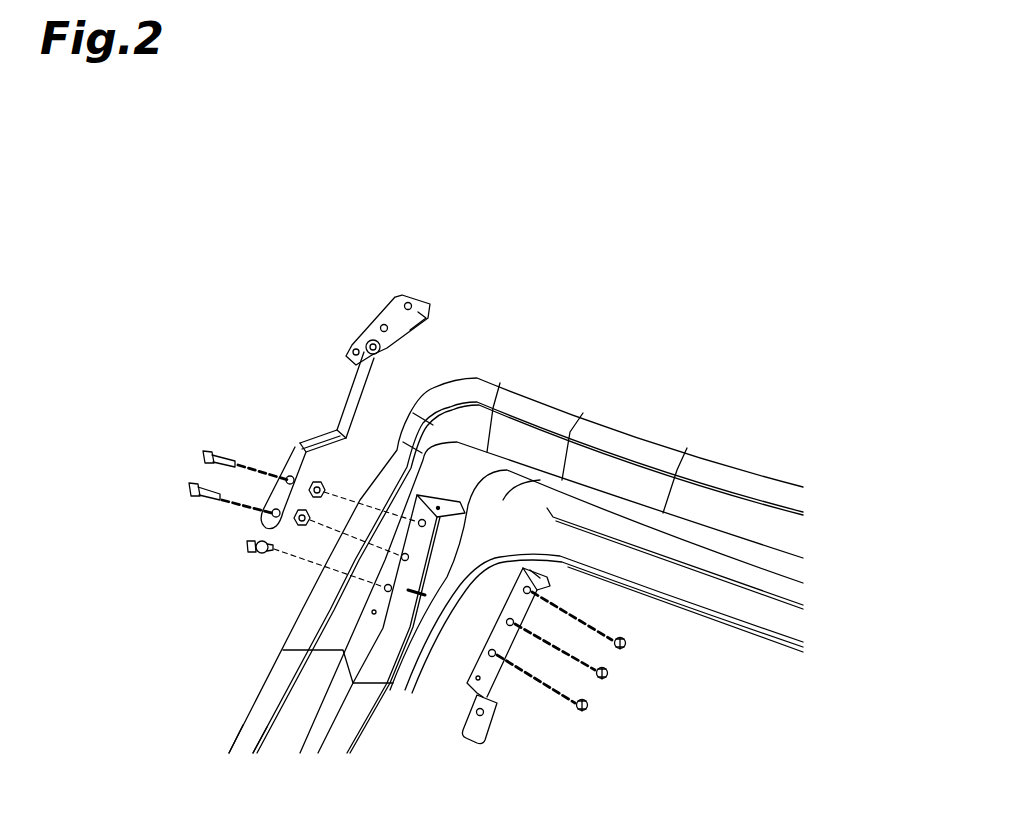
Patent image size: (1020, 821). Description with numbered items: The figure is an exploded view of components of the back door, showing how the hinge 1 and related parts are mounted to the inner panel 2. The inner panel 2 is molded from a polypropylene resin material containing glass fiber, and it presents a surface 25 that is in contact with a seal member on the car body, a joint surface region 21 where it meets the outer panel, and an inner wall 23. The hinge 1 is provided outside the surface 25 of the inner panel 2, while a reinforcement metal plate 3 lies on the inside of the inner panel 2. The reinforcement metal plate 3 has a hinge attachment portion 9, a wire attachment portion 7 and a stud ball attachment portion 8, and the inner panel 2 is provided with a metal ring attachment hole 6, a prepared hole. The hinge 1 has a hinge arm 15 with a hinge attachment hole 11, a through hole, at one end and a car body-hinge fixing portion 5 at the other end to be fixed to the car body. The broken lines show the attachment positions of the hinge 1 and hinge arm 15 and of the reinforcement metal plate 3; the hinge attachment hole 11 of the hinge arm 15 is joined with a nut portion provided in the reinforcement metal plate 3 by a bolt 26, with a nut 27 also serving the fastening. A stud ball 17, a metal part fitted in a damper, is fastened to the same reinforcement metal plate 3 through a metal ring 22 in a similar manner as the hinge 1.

The hinge 1 is at (313, 257).
The inner panel 2 is at (618, 418).
The reinforcement metal plate 3 is at (553, 580).
The car body-hinge fixing portion 5 is at (368, 340).
The metal ring attachment hole (prepared hole) 6 is at (418, 525).
The wire attachment portion (wire engagement portion) 7 is at (487, 715).
The stud ball attachment portion 8 is at (500, 656).
The hinge attachment portion 9 is at (533, 596).
The hinge attachment hole (through hole) 11 is at (268, 502).
The hinge arm 15 is at (348, 400).
The stud ball 17 is at (248, 545).
The joint surface region (of the inner panel and the outer panel) 21 is at (272, 680).
The metal ring 22 is at (322, 484).
The inner wall (of the inner panel) 23 is at (370, 632).
The surface in contact with the seal member on the car body 25 is at (237, 723).
The bolt 26 is at (200, 450).
The nut 27 is at (634, 644).